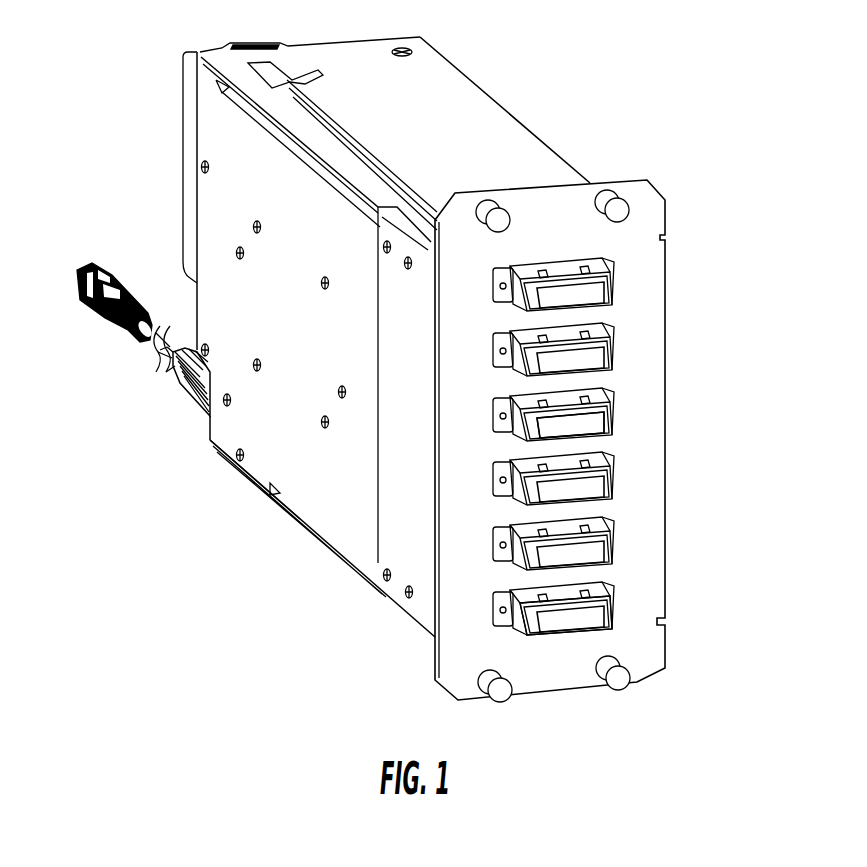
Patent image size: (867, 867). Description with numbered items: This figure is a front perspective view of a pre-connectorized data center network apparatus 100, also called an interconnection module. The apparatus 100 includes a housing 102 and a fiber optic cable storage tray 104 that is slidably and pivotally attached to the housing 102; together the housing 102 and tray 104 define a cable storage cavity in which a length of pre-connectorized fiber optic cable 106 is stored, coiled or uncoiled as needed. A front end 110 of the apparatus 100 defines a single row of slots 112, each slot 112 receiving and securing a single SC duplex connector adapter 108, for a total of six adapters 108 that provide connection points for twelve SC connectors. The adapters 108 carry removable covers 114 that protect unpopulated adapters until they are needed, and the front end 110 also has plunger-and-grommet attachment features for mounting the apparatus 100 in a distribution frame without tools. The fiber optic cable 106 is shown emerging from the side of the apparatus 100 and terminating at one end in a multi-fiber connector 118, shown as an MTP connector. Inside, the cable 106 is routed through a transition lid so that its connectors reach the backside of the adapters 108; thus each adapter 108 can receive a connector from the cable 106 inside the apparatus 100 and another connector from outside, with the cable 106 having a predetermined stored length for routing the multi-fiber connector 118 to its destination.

The data center apparatus 100 is at (659, 109).
The housing 102 is at (513, 110).
The fiber optic cable storage tray 104 is at (222, 437).
The pre-connectorized fiber optic cable 106 is at (148, 337).
The connector adapter 108 is at (600, 328).
The front end 110 is at (664, 523).
The slot 112 is at (617, 578).
The removable cover 114 is at (597, 422).
The multi-fiber connector 118 is at (120, 272).